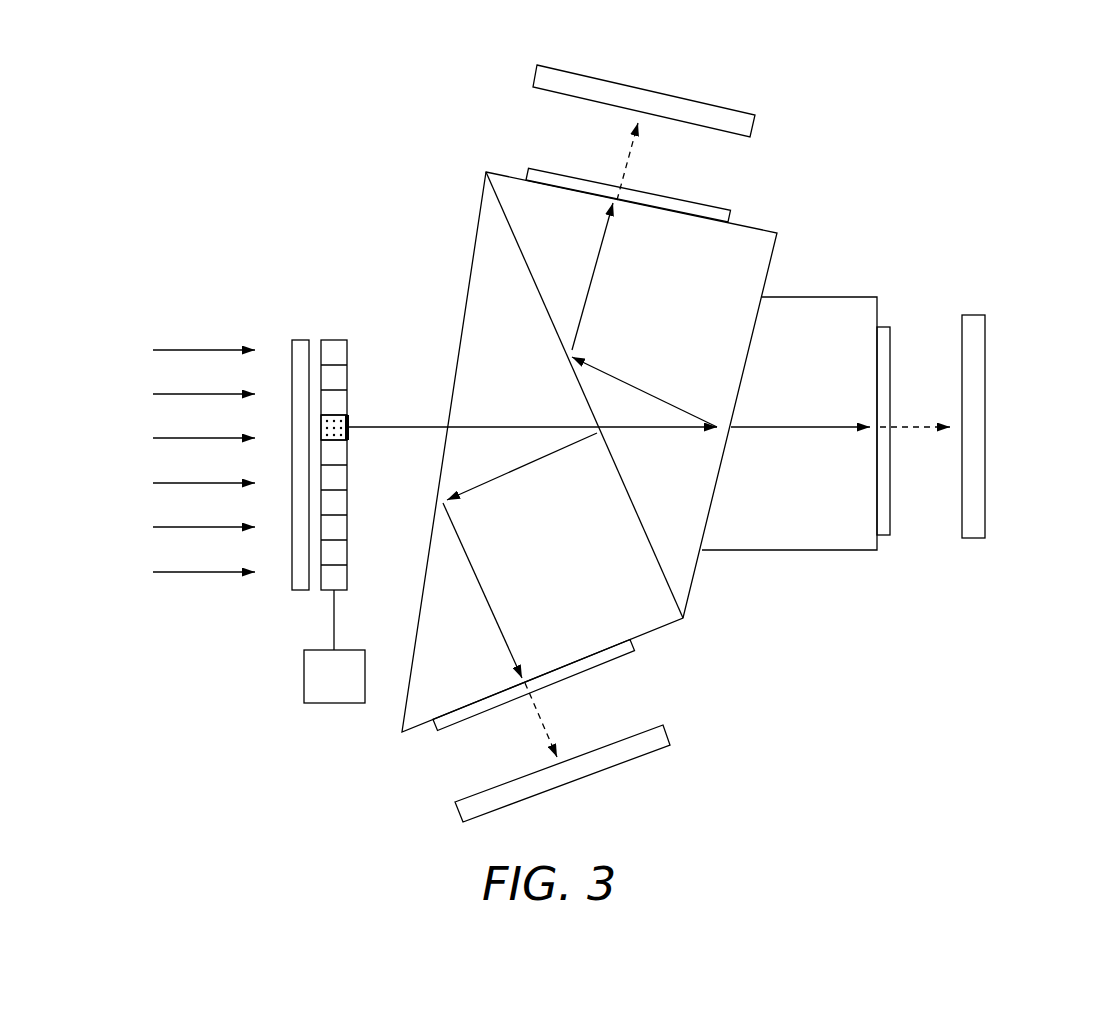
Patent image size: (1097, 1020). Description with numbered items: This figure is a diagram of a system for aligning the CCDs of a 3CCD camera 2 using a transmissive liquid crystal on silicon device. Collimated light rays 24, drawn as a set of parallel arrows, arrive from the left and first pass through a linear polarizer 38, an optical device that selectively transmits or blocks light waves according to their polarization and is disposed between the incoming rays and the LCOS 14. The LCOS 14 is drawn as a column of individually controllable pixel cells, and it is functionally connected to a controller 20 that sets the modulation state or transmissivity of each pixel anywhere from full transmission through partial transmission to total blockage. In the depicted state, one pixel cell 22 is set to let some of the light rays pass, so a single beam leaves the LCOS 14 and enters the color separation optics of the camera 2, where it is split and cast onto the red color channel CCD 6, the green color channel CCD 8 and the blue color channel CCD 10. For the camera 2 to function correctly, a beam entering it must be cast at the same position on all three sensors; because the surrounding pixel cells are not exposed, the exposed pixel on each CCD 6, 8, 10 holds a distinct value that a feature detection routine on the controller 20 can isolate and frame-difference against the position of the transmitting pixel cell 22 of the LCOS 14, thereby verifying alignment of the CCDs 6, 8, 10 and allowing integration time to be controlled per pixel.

The 3CCD camera 2 is at (780, 586).
The red color channel CCD 6 is at (692, 100).
The green color channel CCD 8 is at (985, 480).
The blue color channel CCD 10 is at (670, 733).
The transmissive LCOS 14 is at (328, 338).
The controller 20 is at (320, 692).
The pixel cell 22 is at (350, 433).
The collimated light rays 24 is at (180, 348).
The linear polarizer 38 is at (300, 592).